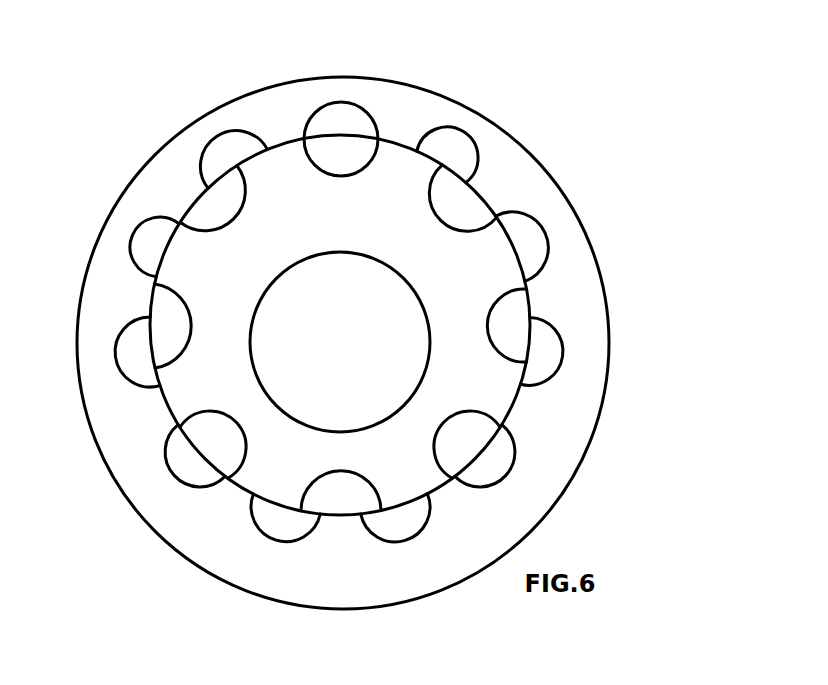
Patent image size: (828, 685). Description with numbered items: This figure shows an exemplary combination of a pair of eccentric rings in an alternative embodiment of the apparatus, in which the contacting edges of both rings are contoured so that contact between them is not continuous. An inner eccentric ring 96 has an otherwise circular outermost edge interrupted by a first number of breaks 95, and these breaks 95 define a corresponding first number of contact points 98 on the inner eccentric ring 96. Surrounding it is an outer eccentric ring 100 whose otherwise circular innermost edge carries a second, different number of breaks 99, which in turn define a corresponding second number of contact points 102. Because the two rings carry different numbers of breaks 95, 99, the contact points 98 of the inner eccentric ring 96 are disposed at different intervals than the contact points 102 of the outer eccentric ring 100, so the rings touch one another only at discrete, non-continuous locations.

The breaks 95 is at (233, 192).
The inner eccentric ring 96 is at (390, 165).
The contact points 98 is at (430, 153).
The breaks 99 is at (322, 115).
The outer eccentric ring 100 is at (587, 300).
The contact points 102 is at (512, 293).